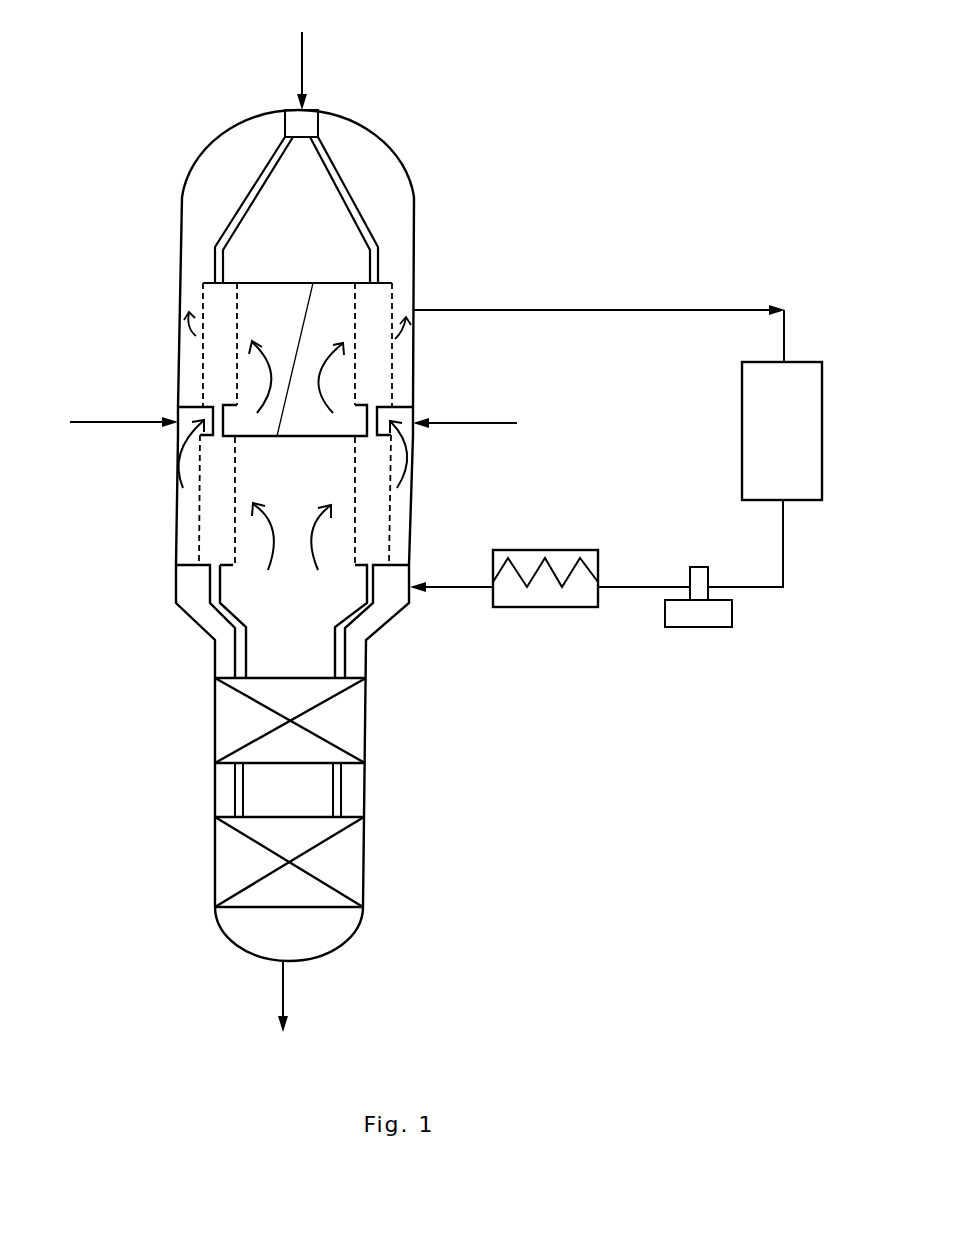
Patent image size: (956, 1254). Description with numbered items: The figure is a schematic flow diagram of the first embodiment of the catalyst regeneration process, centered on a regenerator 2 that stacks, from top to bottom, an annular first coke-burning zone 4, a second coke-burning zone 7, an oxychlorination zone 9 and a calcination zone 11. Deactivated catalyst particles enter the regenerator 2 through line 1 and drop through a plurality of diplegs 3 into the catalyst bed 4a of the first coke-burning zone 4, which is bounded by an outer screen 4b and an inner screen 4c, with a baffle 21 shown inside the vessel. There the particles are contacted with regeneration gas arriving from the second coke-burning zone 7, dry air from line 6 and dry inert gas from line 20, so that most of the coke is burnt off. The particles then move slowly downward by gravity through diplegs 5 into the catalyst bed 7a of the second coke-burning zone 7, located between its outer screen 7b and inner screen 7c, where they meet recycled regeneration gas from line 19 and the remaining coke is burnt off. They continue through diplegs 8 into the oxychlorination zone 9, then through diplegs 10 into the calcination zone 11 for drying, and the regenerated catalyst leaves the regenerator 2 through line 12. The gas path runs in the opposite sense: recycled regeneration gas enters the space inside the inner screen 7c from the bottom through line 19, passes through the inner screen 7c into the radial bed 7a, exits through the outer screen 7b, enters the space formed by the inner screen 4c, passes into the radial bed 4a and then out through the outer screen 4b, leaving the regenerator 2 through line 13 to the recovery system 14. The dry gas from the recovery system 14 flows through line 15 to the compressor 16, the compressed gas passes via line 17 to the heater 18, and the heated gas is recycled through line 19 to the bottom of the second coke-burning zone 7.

The line 1 is at (294, 69).
The regenerator 2 is at (182, 212).
The diplegs 3 is at (297, 210).
The first coke-burning zone 4 is at (232, 290).
The catalyst bed of the first coke-burning zone 4a is at (290, 344).
The outer screen of the first coke-burning zone 4b is at (297, 345).
The inner screen of the first coke-burning zone 4c is at (296, 344).
The diplegs 5 is at (295, 420).
The line 6 is at (124, 439).
The second coke-burning zone 7 is at (225, 547).
The catalyst bed of the second coke-burning zone 7a is at (286, 526).
The outer screen of the second coke-burning zone 7b is at (292, 500).
The inner screen of the second coke-burning zone 7c is at (295, 501).
The diplegs 8 is at (292, 621).
The oxychlorination zone 9 is at (290, 720).
The diplegs 10 is at (289, 790).
The calcination zone 11 is at (289, 862).
The line 12 is at (289, 1009).
The line 13 is at (599, 323).
The recovery system 14 is at (782, 431).
The line 15 is at (759, 543).
The compressor 16 is at (698, 583).
The line 17 is at (644, 569).
The heater 18 is at (545, 564).
The line 19 is at (451, 573).
The line 20 is at (490, 441).
The baffle 21 is at (295, 359).